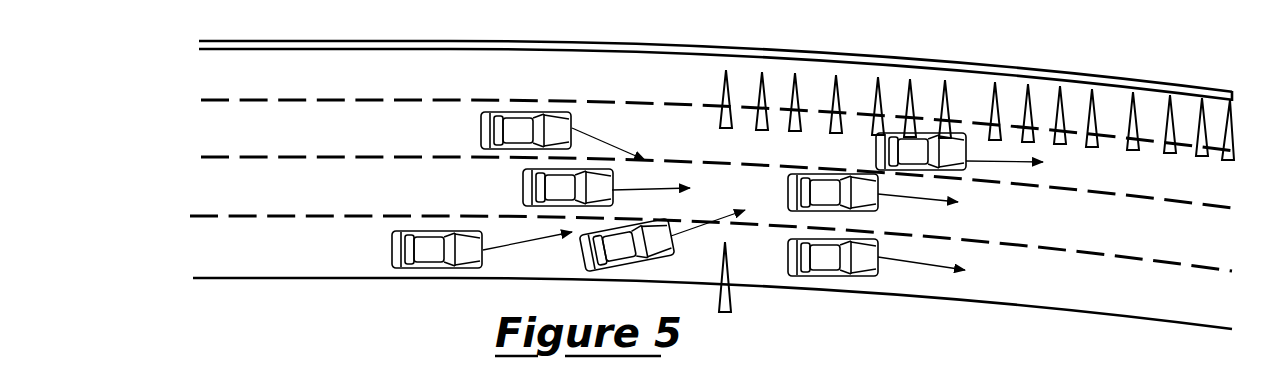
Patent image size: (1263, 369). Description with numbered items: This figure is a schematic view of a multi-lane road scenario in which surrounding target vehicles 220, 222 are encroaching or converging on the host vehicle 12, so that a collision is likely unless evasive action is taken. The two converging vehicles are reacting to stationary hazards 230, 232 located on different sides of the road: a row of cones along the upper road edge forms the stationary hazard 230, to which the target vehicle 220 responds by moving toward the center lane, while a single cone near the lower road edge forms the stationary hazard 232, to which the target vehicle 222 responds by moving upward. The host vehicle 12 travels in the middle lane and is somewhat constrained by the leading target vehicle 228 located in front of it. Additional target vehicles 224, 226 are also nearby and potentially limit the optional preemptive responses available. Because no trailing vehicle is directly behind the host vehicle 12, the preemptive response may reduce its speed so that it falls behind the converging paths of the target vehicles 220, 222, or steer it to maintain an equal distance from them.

The host vehicle 12 is at (522, 187).
The surrounding target vehicle 220 is at (505, 110).
The surrounding target vehicle 222 is at (582, 252).
The remote vehicle 224 is at (390, 252).
The remote vehicle 226 is at (873, 147).
The leading target vehicle 228 is at (881, 204).
The stationary hazard 230 is at (726, 70).
The stationary hazard 232 is at (728, 284).